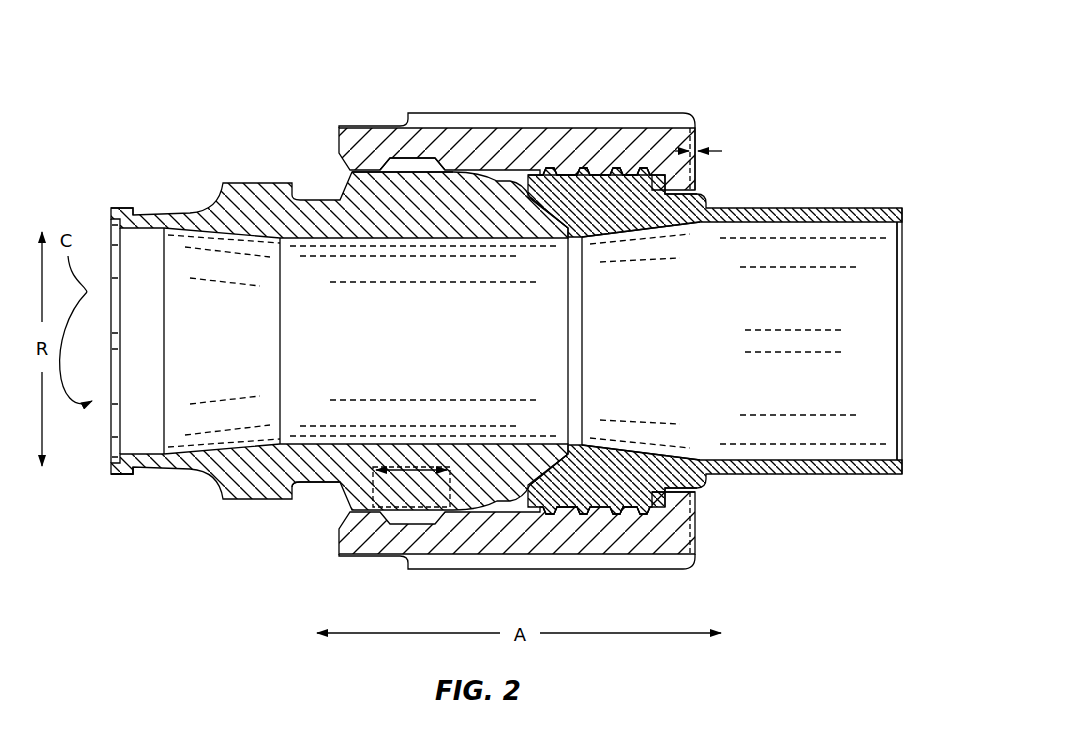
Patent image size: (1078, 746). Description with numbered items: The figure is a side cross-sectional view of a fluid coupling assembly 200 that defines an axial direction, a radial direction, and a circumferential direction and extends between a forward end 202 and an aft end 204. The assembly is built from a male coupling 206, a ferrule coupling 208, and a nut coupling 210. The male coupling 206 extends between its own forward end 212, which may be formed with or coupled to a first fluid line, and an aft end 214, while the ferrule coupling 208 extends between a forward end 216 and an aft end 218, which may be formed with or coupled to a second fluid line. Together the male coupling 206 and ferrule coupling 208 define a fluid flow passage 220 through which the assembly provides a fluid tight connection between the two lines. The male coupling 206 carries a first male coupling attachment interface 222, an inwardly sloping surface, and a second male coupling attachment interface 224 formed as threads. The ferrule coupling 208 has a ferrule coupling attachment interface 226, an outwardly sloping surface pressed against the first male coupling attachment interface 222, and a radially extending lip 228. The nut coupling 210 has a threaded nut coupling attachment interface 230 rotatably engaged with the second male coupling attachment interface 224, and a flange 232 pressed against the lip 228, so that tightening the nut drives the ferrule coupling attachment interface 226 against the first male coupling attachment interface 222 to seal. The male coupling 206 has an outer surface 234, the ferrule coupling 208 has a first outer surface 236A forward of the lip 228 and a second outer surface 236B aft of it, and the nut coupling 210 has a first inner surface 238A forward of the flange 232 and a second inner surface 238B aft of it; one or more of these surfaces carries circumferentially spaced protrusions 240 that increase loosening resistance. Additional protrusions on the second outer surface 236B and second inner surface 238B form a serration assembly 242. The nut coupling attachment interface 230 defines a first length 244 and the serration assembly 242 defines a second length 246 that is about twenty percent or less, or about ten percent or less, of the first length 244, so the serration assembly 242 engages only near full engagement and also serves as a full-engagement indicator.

The fluid coupling assembly 200 is at (506, 308).
The forward end 202 is at (108, 184).
The aft end 204 is at (898, 197).
The male coupling 206 is at (262, 480).
The ferrule coupling 208 is at (780, 207).
The nut coupling 210 is at (525, 142).
The forward end 212 is at (123, 487).
The aft end 214 is at (549, 344).
The forward end 216 is at (590, 360).
The aft end 218 is at (910, 407).
The fluid flow passage 220 is at (204, 380).
The first male coupling attachment interface 222 is at (570, 472).
The second male coupling attachment interface 224 is at (392, 148).
The ferrule coupling attachment interface 226 is at (546, 216).
The lip 228 is at (654, 195).
The nut coupling attachment interface 230 is at (422, 176).
The flange 232 is at (638, 173).
The outer surface 234 is at (316, 485).
The first outer surface 236A is at (634, 512).
The second outer surface 236B is at (690, 497).
The first inner surface 238A is at (560, 500).
The second inner surface 238B is at (686, 492).
The protrusions 240 is at (610, 172).
The serration assembly 242 is at (705, 188).
The first length 244 is at (417, 466).
The second length 246 is at (720, 151).